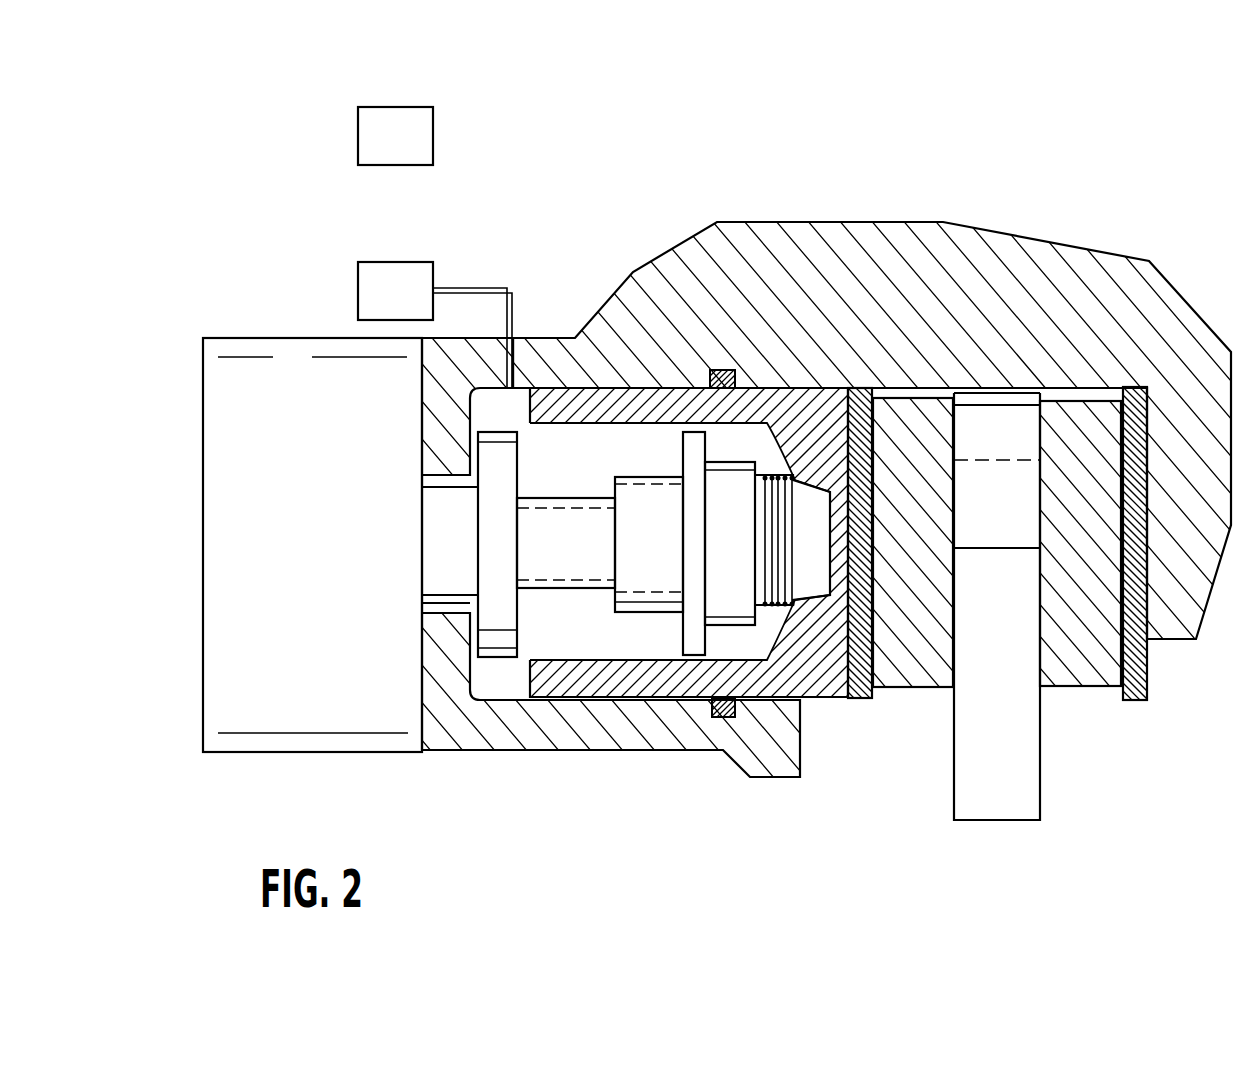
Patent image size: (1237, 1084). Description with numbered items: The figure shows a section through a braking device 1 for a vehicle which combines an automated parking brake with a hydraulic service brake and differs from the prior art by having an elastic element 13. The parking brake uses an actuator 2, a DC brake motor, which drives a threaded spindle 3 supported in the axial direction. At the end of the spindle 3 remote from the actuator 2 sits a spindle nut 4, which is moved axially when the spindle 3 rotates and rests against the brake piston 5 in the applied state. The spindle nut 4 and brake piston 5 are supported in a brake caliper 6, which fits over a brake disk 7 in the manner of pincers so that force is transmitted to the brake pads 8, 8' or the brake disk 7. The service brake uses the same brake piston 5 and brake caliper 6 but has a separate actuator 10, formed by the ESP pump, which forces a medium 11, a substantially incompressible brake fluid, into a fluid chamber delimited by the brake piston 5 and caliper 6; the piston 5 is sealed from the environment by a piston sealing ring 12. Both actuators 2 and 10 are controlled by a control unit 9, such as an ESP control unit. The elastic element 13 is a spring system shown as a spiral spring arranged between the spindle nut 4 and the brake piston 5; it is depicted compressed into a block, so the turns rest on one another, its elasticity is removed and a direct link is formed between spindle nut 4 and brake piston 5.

The braking device 1 is at (1133, 200).
The actuator 2 is at (228, 330).
The spindle 3 is at (570, 570).
The spindle nut 4 is at (640, 568).
The brake piston 5 is at (677, 680).
The brake caliper 6 is at (881, 257).
The brake disk 7 is at (996, 790).
The brake pad 8 is at (859, 582).
The brake pad 8' is at (1022, 582).
The control unit 9 is at (377, 133).
The actuator 10 is at (377, 290).
The medium 11 is at (502, 687).
The piston sealing ring 12 is at (723, 715).
The elastic element 13 is at (773, 612).